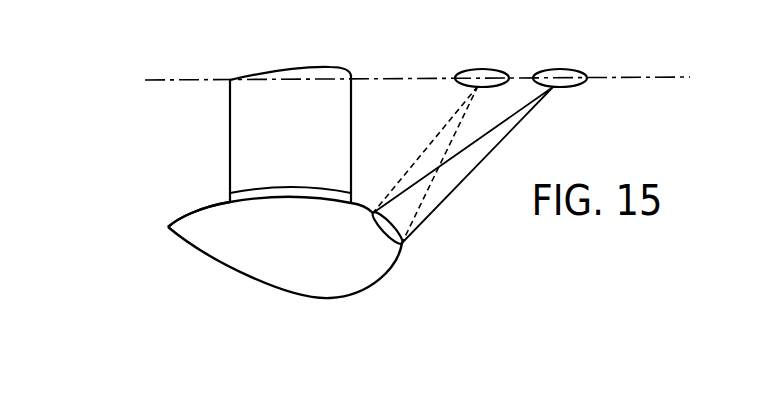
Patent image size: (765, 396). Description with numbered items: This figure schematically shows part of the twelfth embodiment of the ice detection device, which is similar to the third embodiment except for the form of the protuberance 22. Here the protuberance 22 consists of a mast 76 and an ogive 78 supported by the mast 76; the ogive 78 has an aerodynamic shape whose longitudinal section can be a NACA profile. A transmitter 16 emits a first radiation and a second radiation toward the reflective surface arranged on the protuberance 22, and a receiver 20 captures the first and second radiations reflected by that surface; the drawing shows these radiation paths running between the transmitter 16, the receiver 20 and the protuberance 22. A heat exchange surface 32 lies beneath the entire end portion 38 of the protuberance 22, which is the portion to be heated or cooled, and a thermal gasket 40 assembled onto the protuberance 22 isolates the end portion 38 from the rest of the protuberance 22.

The transmitter 16 is at (568, 74).
The receiver 20 is at (477, 74).
The protuberance 22 is at (143, 243).
The heat exchange surface 32 is at (342, 270).
The end portion 38 is at (247, 260).
The thermal gasket 40 is at (240, 203).
The mast 76 is at (242, 113).
The ogive 78 is at (213, 248).